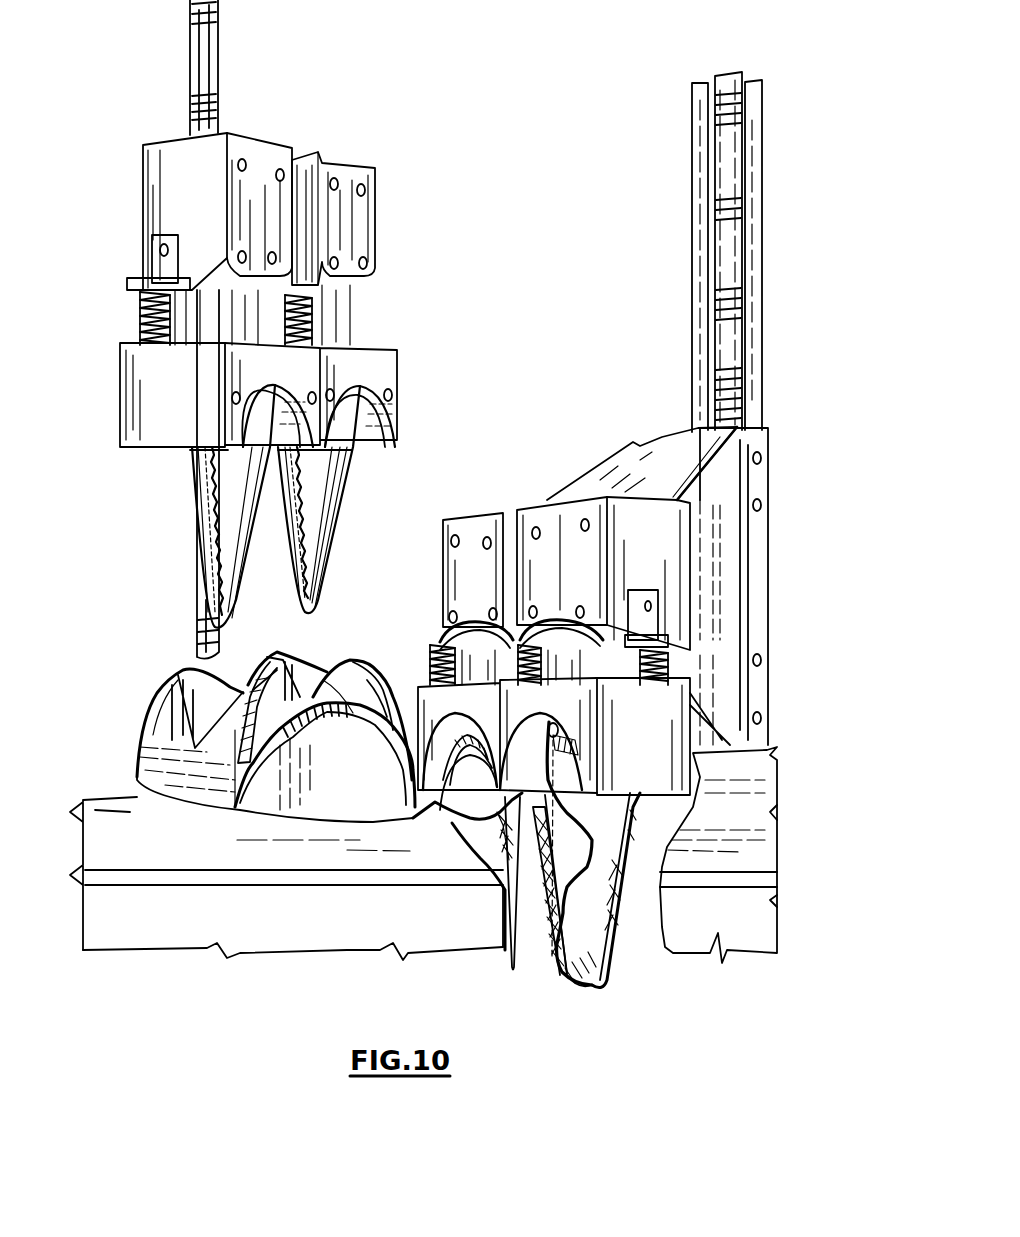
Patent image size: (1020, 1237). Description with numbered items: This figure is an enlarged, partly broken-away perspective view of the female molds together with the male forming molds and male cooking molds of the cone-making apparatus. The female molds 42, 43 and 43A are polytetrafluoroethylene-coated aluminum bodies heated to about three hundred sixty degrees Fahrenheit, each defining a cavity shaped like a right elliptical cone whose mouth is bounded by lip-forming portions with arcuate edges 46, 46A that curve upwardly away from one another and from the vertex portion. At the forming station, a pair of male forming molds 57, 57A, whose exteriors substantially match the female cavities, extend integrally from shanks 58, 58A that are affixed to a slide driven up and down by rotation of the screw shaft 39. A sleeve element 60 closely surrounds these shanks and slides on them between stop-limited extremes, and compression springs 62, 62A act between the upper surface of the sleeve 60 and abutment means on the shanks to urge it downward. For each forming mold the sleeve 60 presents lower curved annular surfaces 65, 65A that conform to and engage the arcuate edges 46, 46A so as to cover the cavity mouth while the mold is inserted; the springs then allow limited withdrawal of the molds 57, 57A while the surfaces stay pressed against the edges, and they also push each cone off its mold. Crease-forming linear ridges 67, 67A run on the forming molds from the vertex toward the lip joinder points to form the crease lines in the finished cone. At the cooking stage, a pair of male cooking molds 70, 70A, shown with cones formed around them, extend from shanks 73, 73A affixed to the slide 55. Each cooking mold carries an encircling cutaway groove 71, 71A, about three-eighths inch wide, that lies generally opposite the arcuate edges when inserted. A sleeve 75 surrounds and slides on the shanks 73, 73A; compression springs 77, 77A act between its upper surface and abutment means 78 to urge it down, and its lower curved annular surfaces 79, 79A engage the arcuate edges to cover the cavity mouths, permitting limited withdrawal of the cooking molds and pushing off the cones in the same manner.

The screw shaft 39 is at (212, 62).
The shank 58 is at (172, 147).
The shank 58A is at (345, 170).
The compression spring 62 is at (142, 322).
The compression spring 62A is at (308, 320).
The sleeve element 60 is at (375, 354).
The lower curved annular surface 65 is at (313, 427).
The lower curved annular surface 65A is at (395, 436).
The crease-forming linear ridge 67 is at (198, 492).
The crease-forming linear ridge 67A is at (310, 522).
The male forming mold 57 is at (228, 560).
The male forming mold 57A is at (320, 560).
The slide 55 is at (762, 656).
The shank 73 is at (453, 512).
The shank 73A is at (550, 510).
The compression spring 77 is at (430, 642).
The compression spring 77A is at (668, 660).
The abutment means 78 is at (668, 632).
The sleeve 75 is at (564, 835).
The lower curved annular surface 79 is at (422, 745).
The lower curved annular surface 79A is at (498, 815).
The male cooking mold 70 is at (474, 808).
The male cooking mold 70A is at (600, 985).
The encircling cutaway groove 71 is at (453, 800).
The encircling cutaway groove 71A is at (553, 958).
The arcuate edge 46 is at (183, 670).
The arcuate edge 46A is at (278, 656).
The female mold 43 is at (153, 727).
The female mold 43A is at (347, 675).
The female mold 42 is at (325, 800).